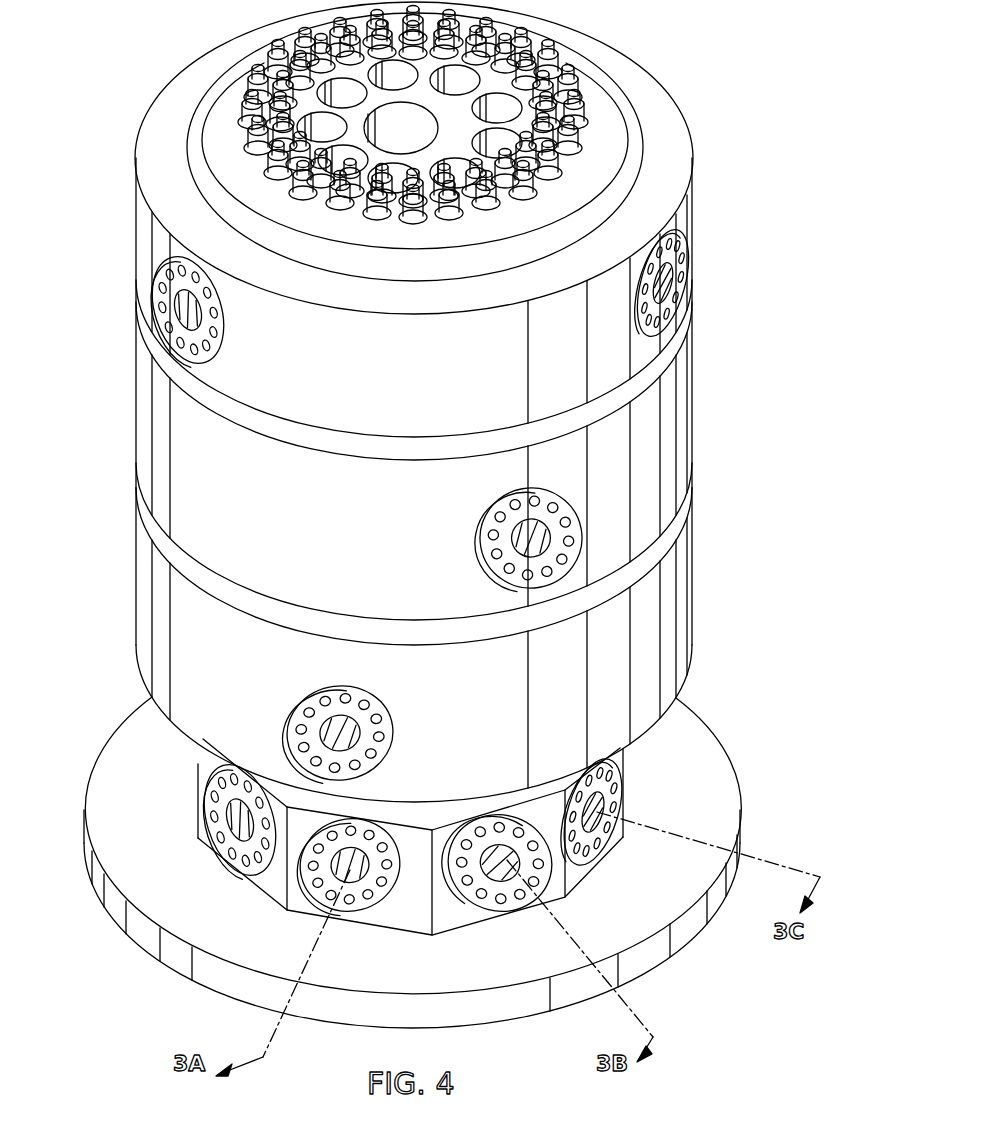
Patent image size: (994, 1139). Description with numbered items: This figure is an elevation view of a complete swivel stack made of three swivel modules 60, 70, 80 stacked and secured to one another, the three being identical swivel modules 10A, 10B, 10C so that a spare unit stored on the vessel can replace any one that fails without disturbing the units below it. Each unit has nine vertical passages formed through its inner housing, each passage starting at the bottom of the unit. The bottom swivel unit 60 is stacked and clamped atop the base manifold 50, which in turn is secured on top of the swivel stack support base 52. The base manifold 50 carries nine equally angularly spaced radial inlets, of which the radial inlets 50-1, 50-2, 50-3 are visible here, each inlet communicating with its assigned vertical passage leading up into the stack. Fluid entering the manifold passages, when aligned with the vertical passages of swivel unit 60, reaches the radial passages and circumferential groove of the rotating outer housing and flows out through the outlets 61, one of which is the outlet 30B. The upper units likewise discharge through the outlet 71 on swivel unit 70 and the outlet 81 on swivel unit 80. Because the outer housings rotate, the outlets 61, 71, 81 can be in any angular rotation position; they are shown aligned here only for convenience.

The swivel module 10A is at (657, 103).
The swivel module 10B is at (667, 418).
The swivel module 10C is at (668, 613).
The swivel unit 80 is at (314, 380).
The outlet 81 is at (186, 318).
The swivel unit 70 is at (280, 535).
The outlet 71 is at (537, 530).
The swivel unit 60 is at (243, 685).
The outlet 61 is at (378, 728).
The outlet 30B is at (355, 731).
The base manifold 50 is at (308, 907).
The radial inlet 50-1 is at (352, 880).
The radial inlet 50-2 is at (507, 858).
The radial inlet 50-3 is at (620, 807).
The swivel stack support base 52 is at (660, 912).